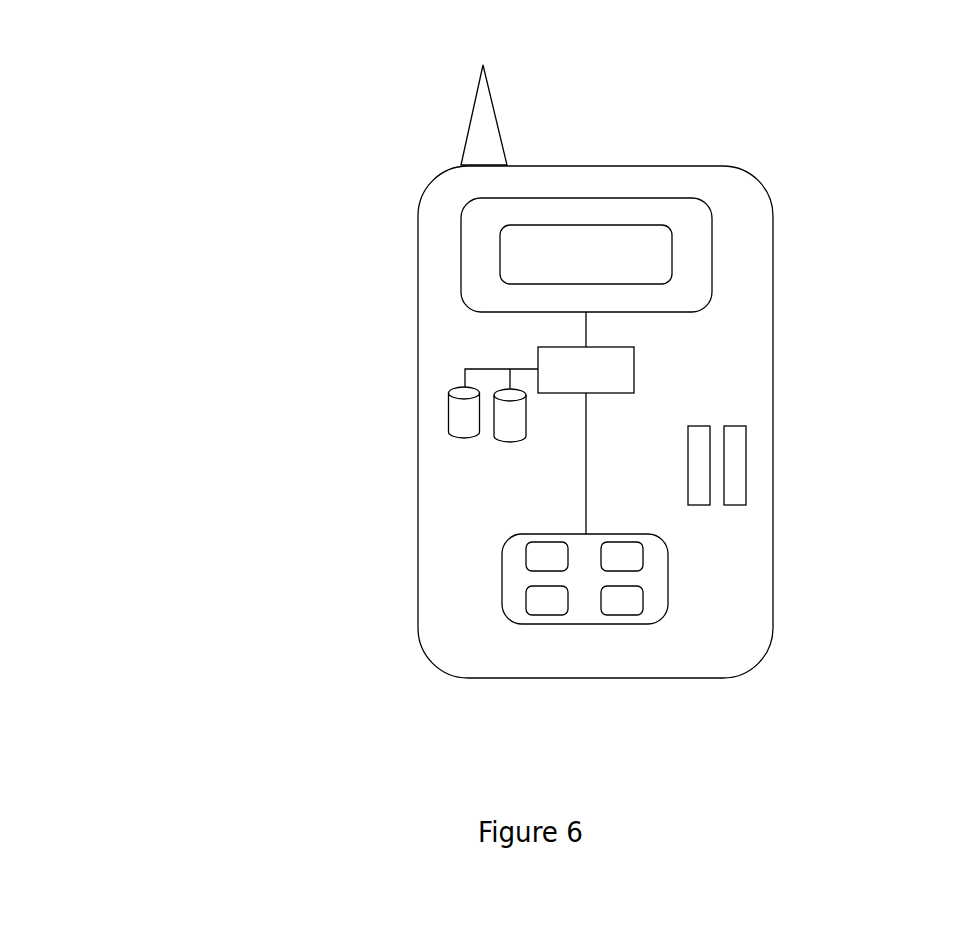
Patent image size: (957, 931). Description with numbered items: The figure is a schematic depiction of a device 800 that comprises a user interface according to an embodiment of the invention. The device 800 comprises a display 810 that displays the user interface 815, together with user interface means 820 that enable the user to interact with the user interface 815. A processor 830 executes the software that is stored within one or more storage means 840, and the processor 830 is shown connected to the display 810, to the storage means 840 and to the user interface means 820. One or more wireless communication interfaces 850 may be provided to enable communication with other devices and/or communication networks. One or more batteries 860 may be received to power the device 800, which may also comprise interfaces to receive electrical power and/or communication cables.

The device 800 is at (403, 260).
The display 810 is at (692, 197).
The user interface 815 is at (640, 261).
The user interface means 820 is at (528, 627).
The processor 830 is at (620, 374).
The storage means 840 is at (510, 423).
The wireless communication interface 850 is at (463, 123).
The battery 860 is at (698, 483).